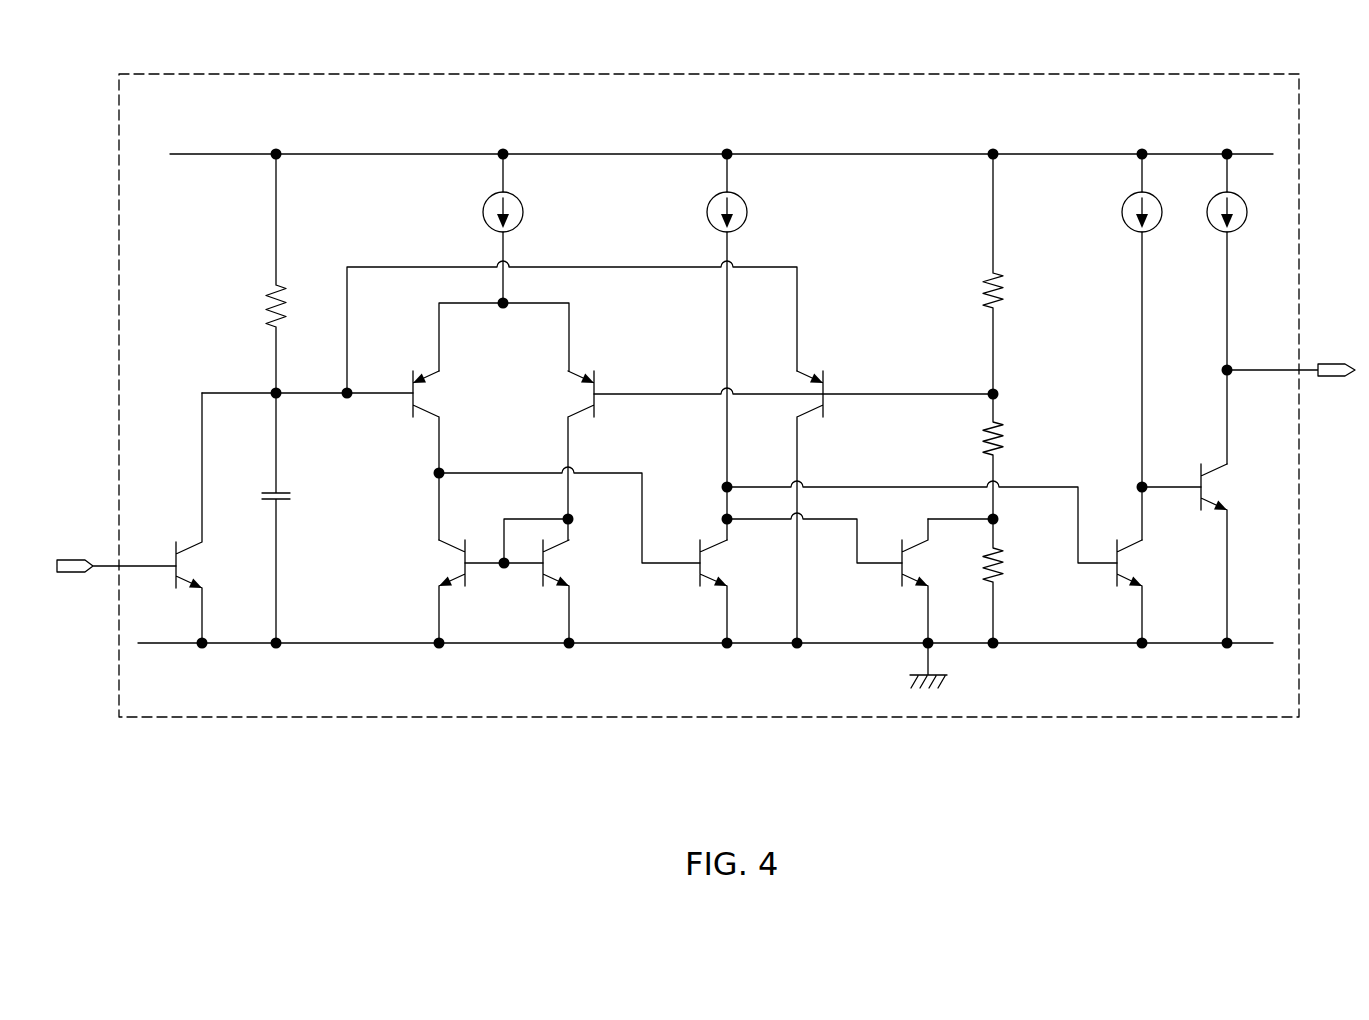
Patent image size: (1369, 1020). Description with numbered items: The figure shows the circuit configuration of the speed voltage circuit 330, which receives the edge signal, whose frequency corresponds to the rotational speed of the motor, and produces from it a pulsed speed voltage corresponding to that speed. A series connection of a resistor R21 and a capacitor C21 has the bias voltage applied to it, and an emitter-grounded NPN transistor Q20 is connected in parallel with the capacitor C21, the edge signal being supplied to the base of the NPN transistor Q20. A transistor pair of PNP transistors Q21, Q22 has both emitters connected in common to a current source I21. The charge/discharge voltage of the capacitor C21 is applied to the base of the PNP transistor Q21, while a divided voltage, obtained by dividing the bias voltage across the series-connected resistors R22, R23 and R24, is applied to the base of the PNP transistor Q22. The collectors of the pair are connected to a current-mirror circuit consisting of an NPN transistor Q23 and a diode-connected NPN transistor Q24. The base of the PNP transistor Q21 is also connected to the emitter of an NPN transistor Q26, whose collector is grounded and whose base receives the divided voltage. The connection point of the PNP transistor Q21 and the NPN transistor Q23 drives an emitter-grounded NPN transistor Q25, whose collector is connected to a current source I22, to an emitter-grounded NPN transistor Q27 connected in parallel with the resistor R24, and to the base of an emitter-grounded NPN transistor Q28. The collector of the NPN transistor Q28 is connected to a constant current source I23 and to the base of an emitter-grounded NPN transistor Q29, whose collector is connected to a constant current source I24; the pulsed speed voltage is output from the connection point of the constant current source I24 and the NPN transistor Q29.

The speed voltage circuit 330 is at (1062, 73).
The NPN transistor Q20 is at (212, 518).
The PNP transistor Q21 is at (445, 455).
The PNP transistor Q22 is at (561, 455).
The NPN transistor Q23 is at (434, 591).
The diode-connected NPN transistor Q24 is at (578, 591).
The NPN transistor Q25 is at (734, 591).
The NPN transistor Q26 is at (833, 502).
The NPN transistor Q27 is at (936, 581).
The NPN transistor Q28 is at (1152, 591).
The NPN transistor Q29 is at (1236, 553).
The resistor R21 is at (300, 273).
The resistor R22 is at (1017, 274).
The resistor R23 is at (1017, 456).
The resistor R24 is at (1017, 581).
The capacitor C21 is at (298, 518).
The current source I21 is at (523, 228).
The current source I22 is at (745, 347).
The constant current source I23 is at (1159, 347).
The constant current source I24 is at (1244, 309).